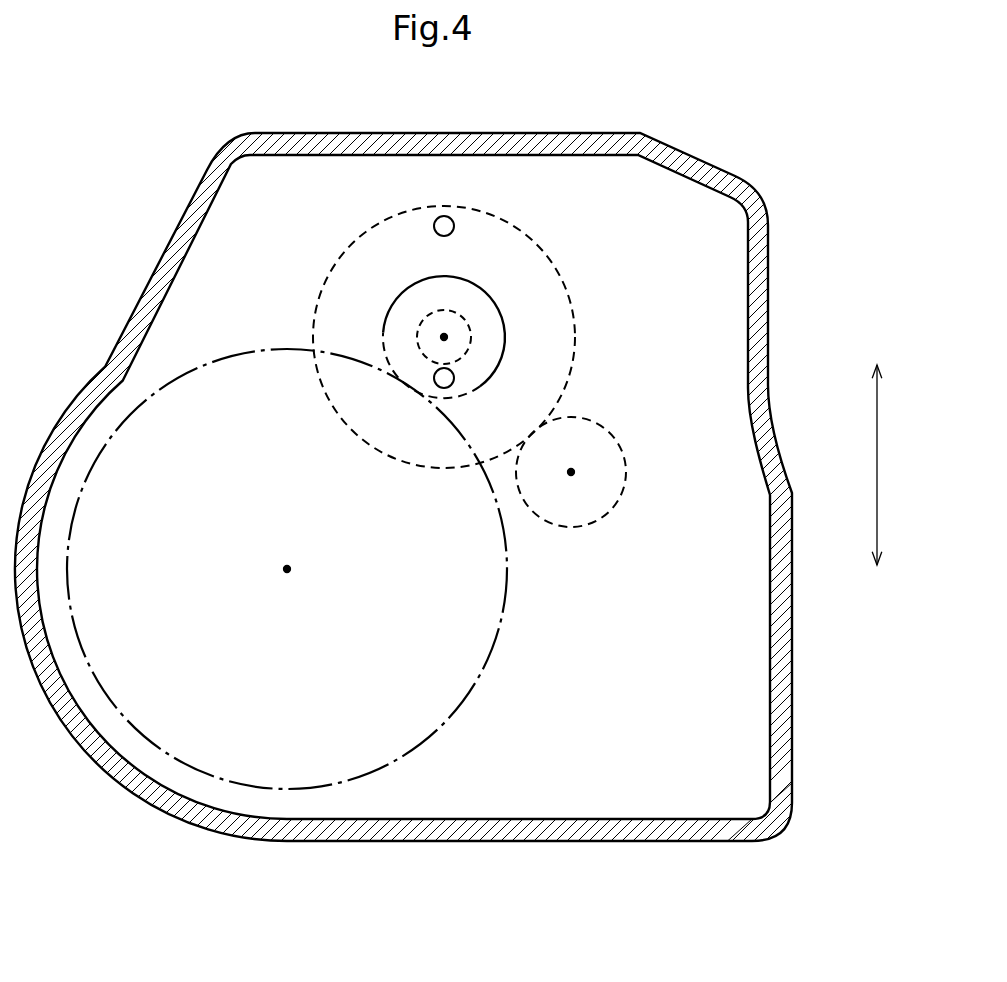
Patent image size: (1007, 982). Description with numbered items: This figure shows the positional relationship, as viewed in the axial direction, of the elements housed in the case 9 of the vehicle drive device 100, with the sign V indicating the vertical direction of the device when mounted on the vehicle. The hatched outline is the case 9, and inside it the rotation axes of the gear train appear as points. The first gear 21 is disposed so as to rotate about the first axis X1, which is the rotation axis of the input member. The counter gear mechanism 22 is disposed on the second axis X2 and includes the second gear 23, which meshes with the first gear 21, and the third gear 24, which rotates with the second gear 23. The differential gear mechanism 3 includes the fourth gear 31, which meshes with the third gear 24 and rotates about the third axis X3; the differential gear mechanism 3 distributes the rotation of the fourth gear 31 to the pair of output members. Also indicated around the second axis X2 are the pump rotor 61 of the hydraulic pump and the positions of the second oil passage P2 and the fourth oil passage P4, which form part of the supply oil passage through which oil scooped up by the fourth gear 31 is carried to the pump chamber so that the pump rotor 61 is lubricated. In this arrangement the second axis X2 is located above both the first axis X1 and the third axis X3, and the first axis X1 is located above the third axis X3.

The vehicle drive device 100 is at (503, 450).
The case 9 is at (137, 330).
The differential gear mechanism 3 is at (330, 569).
The fourth gear 31 is at (453, 717).
The third axis X3 is at (287, 569).
The first gear 21 is at (609, 506).
The first axis X1 is at (571, 472).
The counter gear mechanism 22 is at (508, 307).
The second gear 23 is at (563, 282).
The third gear 24 is at (396, 300).
The pump rotor 61 is at (471, 337).
The second axis X2 is at (444, 337).
The fourth oil passage P4 is at (445, 216).
The second oil passage P2 is at (443, 388).
The vertical direction V is at (865, 465).